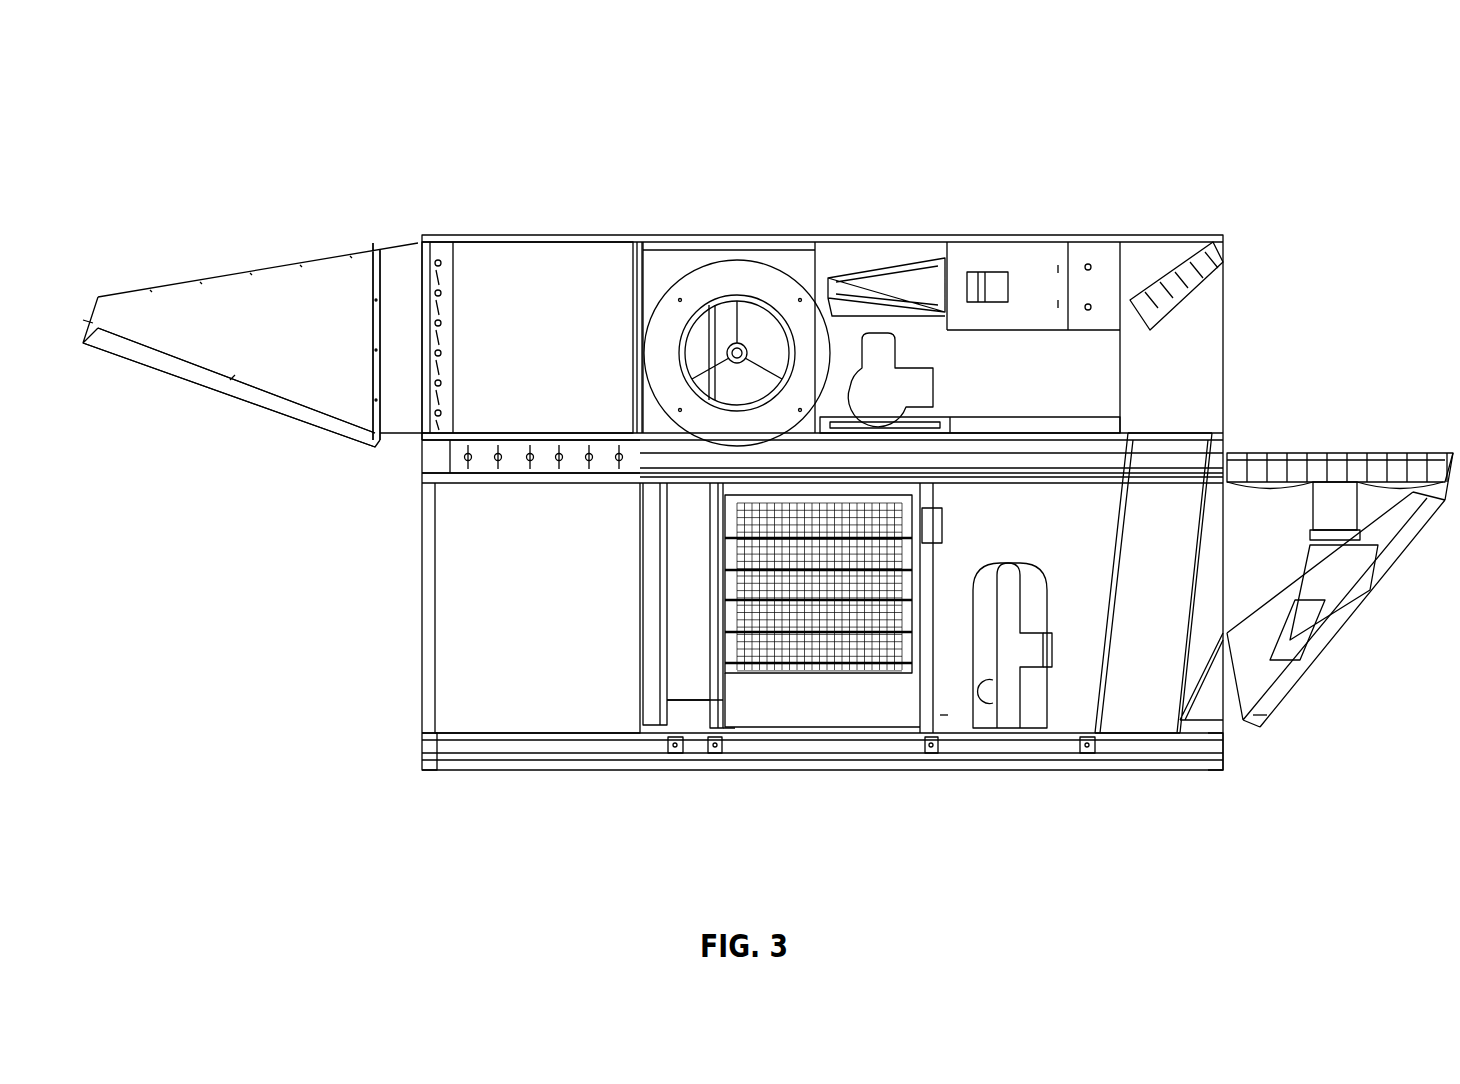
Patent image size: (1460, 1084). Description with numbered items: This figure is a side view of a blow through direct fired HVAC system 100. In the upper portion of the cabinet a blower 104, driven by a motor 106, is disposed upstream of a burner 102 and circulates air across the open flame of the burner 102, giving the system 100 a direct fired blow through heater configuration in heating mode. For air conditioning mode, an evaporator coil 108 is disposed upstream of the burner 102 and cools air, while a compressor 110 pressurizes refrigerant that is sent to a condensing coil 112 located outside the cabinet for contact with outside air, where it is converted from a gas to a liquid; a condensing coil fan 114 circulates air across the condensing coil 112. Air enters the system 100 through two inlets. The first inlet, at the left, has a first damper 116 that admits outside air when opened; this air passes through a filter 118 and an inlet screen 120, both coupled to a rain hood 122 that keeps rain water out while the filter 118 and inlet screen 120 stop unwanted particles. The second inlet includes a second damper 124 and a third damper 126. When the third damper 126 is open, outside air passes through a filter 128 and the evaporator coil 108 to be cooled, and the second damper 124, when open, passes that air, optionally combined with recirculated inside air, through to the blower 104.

The blow through direct fired HVAC system 100 is at (1325, 95).
The burner 102 is at (898, 287).
The blower 104 is at (737, 355).
The motor 106 is at (888, 385).
The evaporator coil 108 is at (652, 665).
The compressor 110 is at (1010, 690).
The condensing coil 112 is at (1280, 688).
The condensing coil fan 114 is at (1338, 515).
The first damper 116 is at (435, 323).
The filter 118 is at (255, 397).
The inlet screen 120 is at (375, 347).
The rain hood 122 is at (250, 295).
The second damper 124 is at (528, 460).
The third damper 126 is at (832, 600).
The filter 128 is at (717, 688).